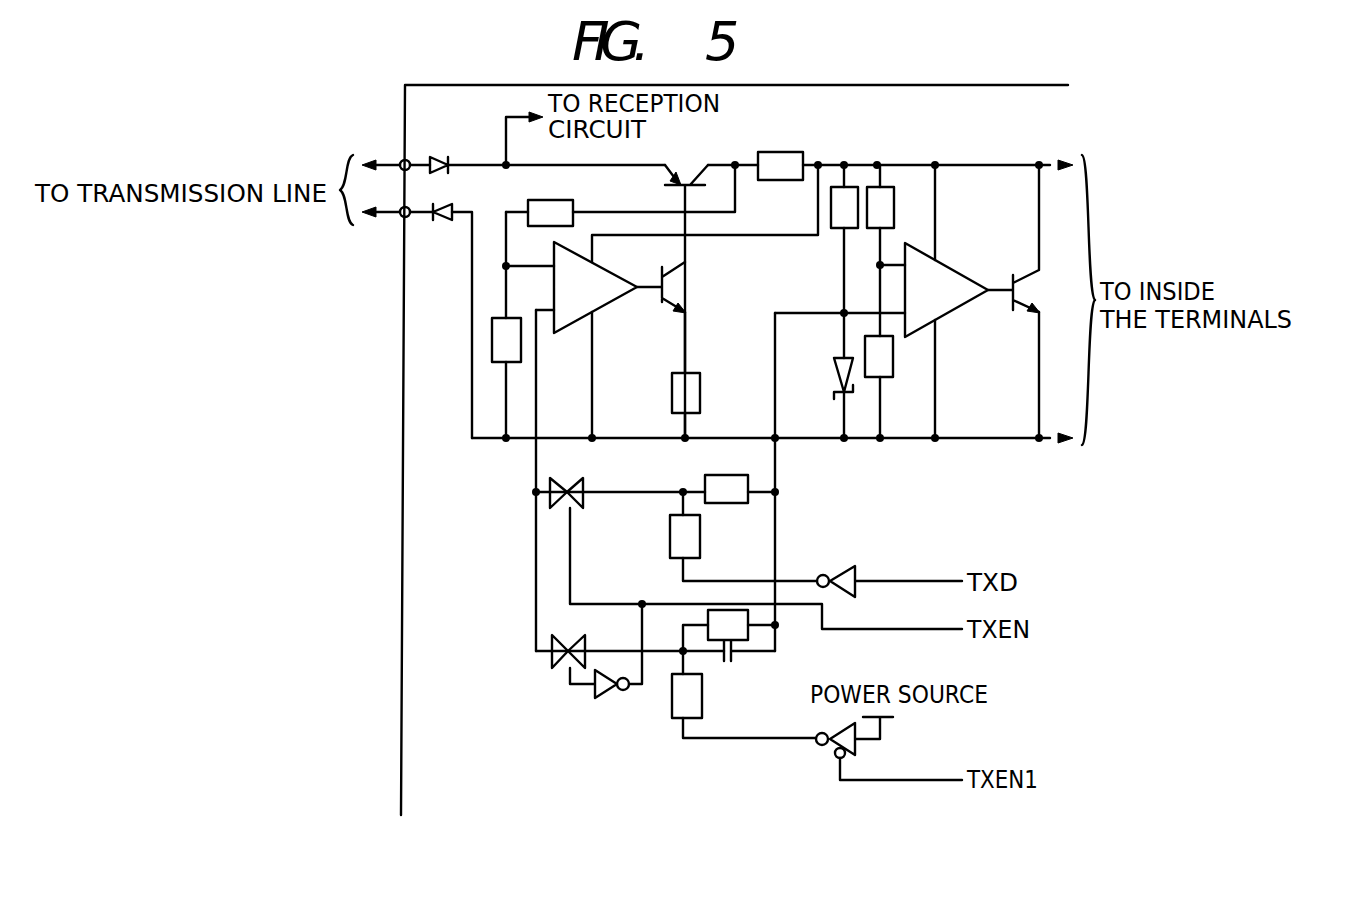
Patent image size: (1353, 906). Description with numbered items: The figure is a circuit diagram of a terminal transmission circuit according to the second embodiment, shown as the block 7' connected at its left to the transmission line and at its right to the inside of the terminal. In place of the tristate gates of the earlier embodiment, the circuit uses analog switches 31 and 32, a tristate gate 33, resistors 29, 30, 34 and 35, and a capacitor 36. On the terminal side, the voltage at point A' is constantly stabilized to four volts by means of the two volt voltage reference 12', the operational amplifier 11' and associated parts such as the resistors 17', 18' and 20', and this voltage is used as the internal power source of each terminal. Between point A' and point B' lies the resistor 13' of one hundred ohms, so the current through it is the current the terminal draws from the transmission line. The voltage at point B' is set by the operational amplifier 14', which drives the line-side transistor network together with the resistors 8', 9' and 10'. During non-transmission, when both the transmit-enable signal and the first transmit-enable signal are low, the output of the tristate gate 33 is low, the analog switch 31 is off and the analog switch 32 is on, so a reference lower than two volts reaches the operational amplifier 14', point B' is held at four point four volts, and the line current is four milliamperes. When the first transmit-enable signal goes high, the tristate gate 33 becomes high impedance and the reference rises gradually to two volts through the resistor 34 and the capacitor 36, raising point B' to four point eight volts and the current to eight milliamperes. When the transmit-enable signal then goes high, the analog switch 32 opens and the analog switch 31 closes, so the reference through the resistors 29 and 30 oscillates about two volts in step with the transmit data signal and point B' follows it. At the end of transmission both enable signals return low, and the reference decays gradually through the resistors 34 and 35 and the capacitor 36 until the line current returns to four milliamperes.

The transmission circuit 7' is at (744, 430).
The resistor 8' is at (518, 327).
The resistor 9' is at (620, 196).
The resistor 10' is at (716, 407).
The operational amplifier 11' is at (909, 301).
The 2 V voltage reference 12' is at (816, 392).
The resistor 13' is at (780, 193).
The operational amplifier 14' is at (662, 303).
The resistor 17' is at (827, 259).
The resistor 18' is at (905, 248).
The resistor 20' is at (901, 389).
The resistor 29 is at (710, 475).
The resistor 30 is at (700, 537).
The analog switch 31 is at (583, 480).
The analog switch 32 is at (585, 645).
The tristate gate 33 is at (830, 750).
The resistor 34 is at (708, 615).
The resistor 35 is at (672, 700).
The capacitor 36 is at (735, 660).
The point A′ A' is at (977, 142).
The point B′ B' is at (712, 275).